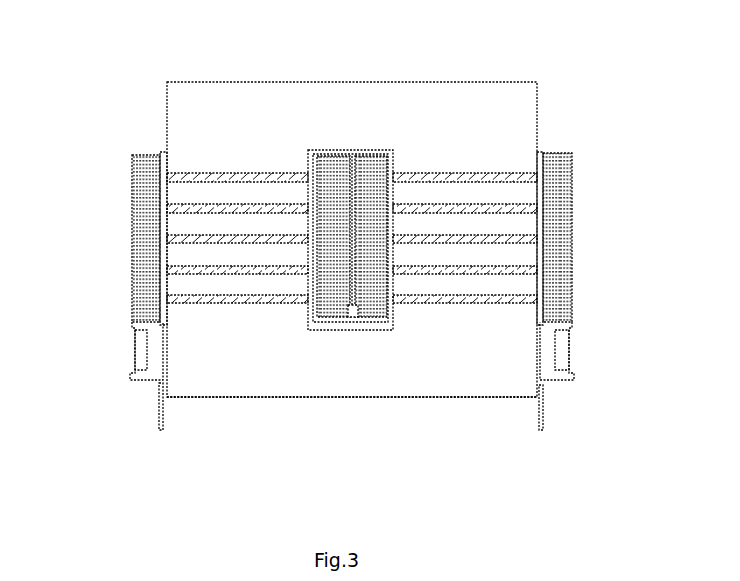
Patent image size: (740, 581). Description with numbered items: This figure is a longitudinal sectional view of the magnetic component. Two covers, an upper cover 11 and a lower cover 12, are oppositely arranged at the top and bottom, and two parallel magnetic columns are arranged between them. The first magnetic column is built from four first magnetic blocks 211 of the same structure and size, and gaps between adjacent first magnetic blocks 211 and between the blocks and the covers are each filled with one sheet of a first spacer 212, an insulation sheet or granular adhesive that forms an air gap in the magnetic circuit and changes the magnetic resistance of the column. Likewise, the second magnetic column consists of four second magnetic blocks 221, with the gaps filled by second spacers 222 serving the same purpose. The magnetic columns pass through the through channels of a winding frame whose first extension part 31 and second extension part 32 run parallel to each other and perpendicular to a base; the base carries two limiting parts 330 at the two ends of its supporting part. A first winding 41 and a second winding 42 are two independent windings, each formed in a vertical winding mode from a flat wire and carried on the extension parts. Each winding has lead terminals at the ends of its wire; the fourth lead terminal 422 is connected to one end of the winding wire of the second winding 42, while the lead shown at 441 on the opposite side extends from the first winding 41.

The upper cover 11 is at (305, 111).
The lower cover 12 is at (334, 371).
The first extension part 31 is at (162, 153).
The second extension part 32 is at (542, 153).
The first winding 41 is at (138, 177).
The second winding 42 is at (571, 175).
The first magnetic block 211 is at (178, 198).
The first spacer 212 is at (182, 300).
The second magnetic block 221 is at (523, 198).
The second spacer 222 is at (520, 303).
The limiting part 330 is at (163, 351).
The first lead pin 441 is at (162, 388).
The fourth lead terminal 422 is at (541, 388).